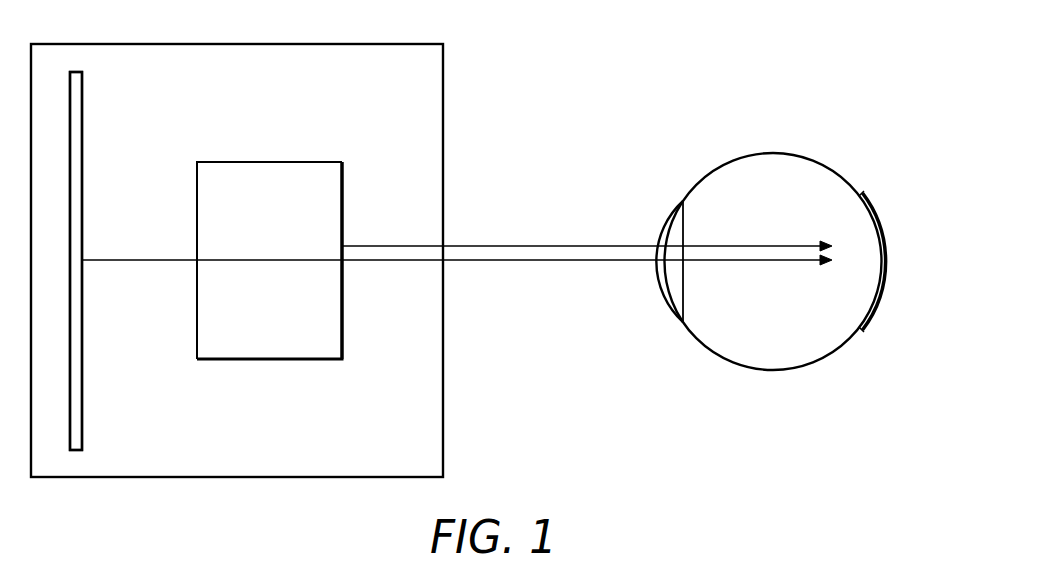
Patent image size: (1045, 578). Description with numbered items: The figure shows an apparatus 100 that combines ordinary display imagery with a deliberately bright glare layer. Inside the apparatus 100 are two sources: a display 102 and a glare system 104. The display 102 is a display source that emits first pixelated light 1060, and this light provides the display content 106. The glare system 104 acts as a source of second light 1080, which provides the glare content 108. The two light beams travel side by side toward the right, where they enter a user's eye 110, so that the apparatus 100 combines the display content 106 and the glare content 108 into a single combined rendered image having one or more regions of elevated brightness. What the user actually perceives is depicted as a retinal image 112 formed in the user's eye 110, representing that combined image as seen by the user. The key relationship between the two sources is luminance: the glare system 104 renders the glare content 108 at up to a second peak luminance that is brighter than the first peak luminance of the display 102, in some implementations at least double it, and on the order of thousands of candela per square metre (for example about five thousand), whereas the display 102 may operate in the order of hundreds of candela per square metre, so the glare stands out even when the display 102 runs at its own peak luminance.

The apparatus 100 is at (444, 57).
The display 102 is at (75, 72).
The glare system 104 is at (266, 162).
The display content 106 is at (84, 97).
The glare content 108 is at (343, 172).
The user's eye 110 is at (771, 153).
The retinal image 112 is at (872, 201).
The first pixelated light 1060 is at (545, 262).
The second light 1080 is at (541, 245).